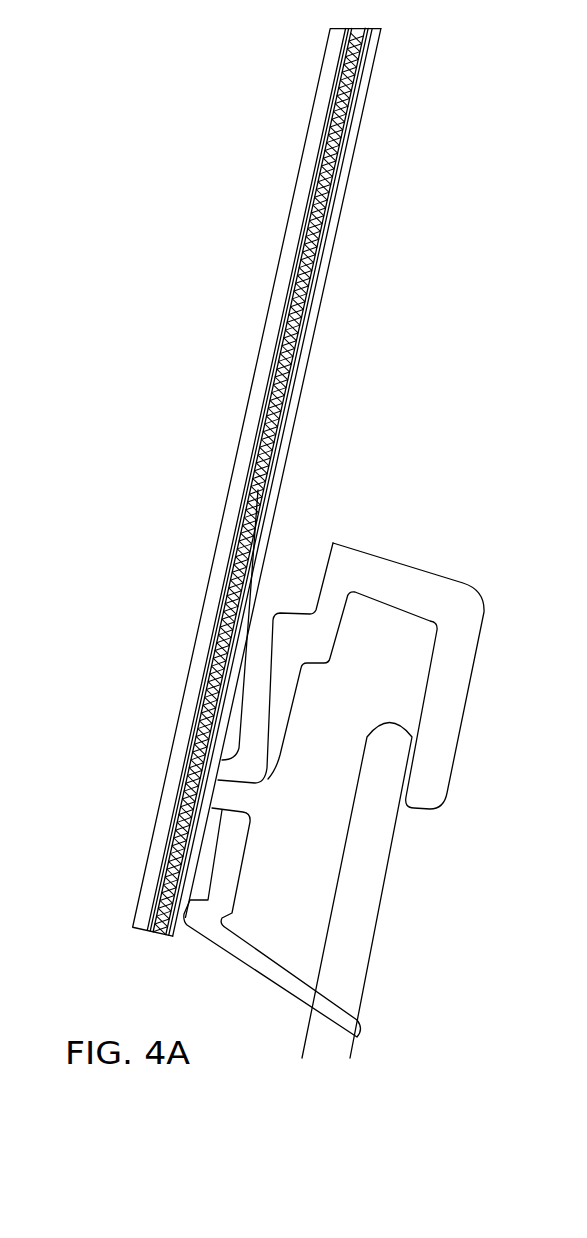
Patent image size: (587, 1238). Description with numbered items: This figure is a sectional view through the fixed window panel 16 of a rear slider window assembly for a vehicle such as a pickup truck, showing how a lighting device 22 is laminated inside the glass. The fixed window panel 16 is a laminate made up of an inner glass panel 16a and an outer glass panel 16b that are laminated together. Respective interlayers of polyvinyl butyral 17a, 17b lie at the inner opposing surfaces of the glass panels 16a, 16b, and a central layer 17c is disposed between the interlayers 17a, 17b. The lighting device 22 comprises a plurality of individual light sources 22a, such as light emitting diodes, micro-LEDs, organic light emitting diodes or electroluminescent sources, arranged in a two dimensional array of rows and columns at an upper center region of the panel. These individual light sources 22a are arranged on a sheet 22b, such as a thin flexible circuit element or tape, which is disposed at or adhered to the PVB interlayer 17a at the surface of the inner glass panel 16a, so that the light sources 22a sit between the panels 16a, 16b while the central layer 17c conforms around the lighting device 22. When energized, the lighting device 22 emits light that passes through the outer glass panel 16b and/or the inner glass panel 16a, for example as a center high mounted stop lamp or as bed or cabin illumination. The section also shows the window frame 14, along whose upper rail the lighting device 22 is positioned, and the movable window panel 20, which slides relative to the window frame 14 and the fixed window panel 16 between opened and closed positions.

The window frame 14 is at (472, 585).
The fixed window panel 16 is at (269, 478).
The inner glass panel 16a is at (350, 118).
The outer glass panel 16b is at (297, 160).
The interlayer of polyvinyl butyral 17a is at (312, 265).
The interlayer of polyvinyl butyral 17b is at (282, 295).
The central layer 17c is at (308, 218).
The movable window panel 20 is at (372, 923).
The lighting device 22 is at (256, 481).
The individual light sources 22a is at (265, 410).
The sheet 22b is at (282, 382).